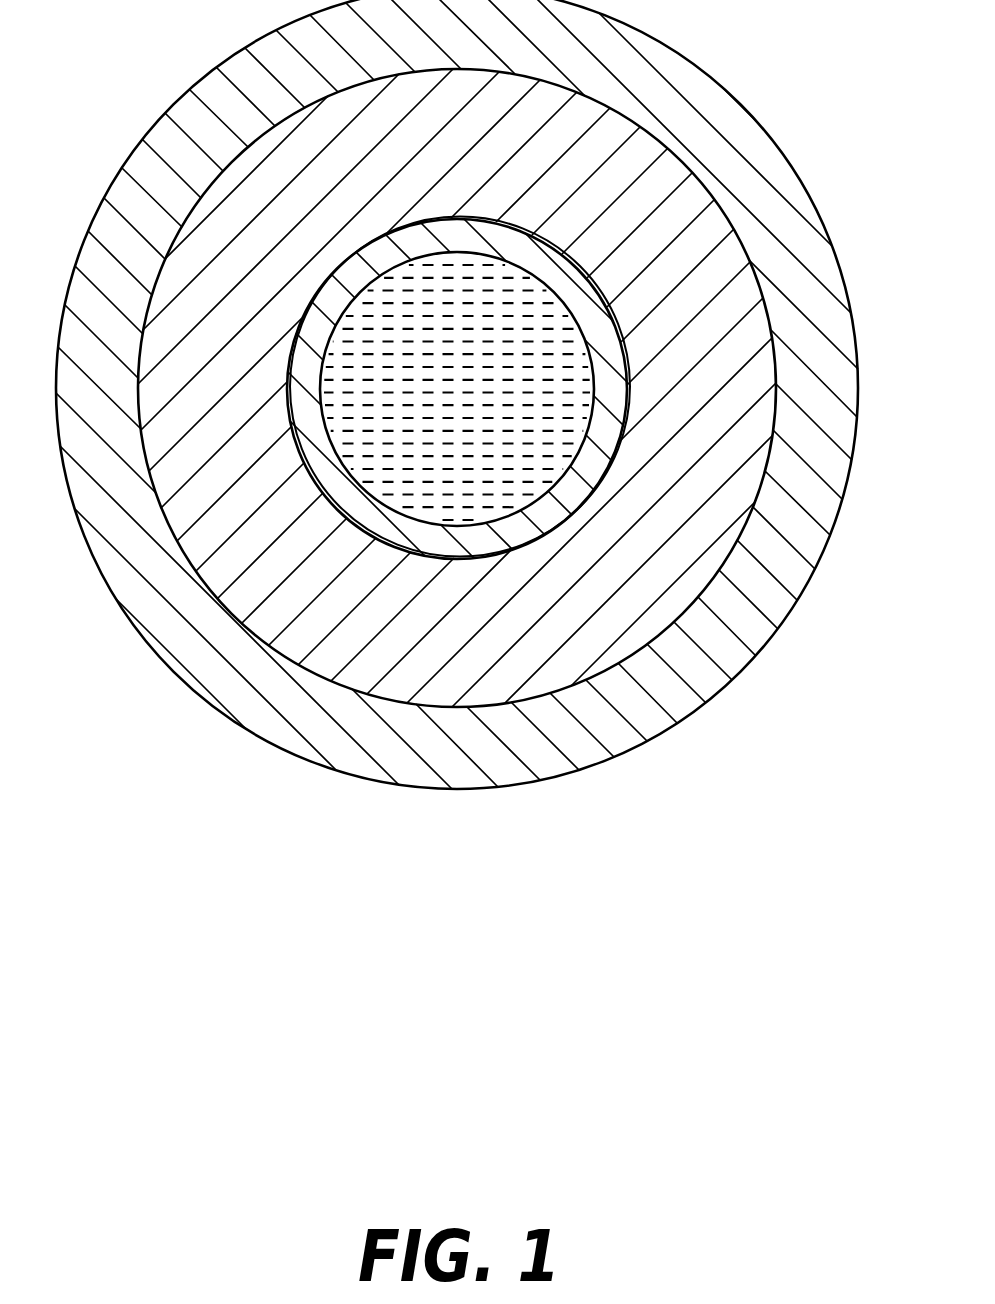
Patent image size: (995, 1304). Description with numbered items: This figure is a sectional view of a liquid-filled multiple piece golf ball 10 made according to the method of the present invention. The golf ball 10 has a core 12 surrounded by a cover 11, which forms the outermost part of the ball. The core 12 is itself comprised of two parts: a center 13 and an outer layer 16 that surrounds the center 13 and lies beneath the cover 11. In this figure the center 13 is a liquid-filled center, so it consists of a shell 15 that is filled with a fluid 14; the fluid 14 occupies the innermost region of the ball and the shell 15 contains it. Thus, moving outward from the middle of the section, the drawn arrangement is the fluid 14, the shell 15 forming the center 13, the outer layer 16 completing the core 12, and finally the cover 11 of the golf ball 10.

The golf ball 10 is at (727, 696).
The cover 11 is at (370, 728).
The core 12 is at (719, 584).
The center 13 is at (450, 207).
The fluid 14 is at (400, 475).
The shell 15 is at (320, 460).
The outer layer 16 is at (566, 650).